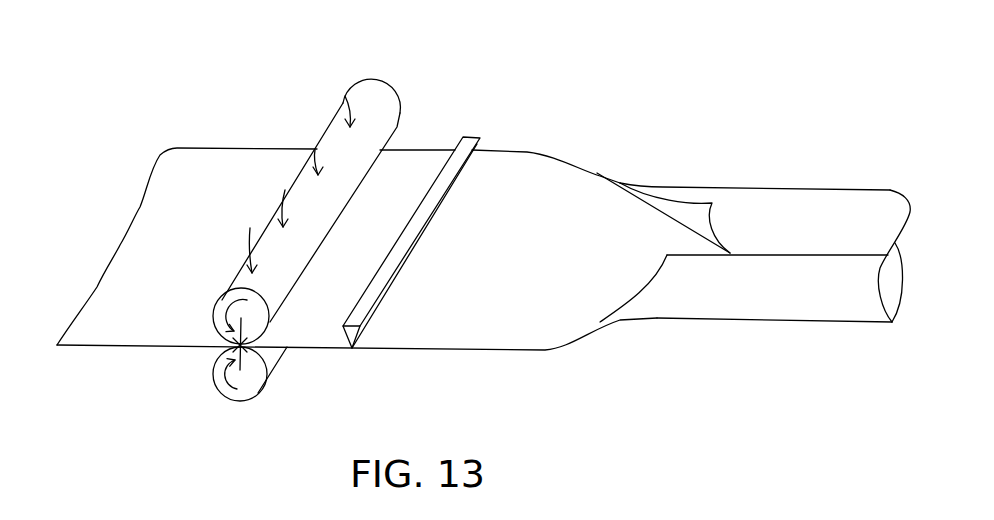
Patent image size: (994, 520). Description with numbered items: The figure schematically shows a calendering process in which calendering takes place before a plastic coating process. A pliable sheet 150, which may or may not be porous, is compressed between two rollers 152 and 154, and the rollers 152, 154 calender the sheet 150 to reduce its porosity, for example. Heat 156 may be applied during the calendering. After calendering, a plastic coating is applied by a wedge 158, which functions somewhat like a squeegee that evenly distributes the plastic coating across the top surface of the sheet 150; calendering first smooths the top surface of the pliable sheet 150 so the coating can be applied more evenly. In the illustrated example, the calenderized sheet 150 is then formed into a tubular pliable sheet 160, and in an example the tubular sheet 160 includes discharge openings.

The pliable sheet 150 is at (100, 347).
The roller 152 is at (378, 93).
The roller 154 is at (253, 402).
The heat 156 is at (317, 130).
The wedge 158 is at (480, 150).
The tubular pliable sheet 160 is at (802, 193).